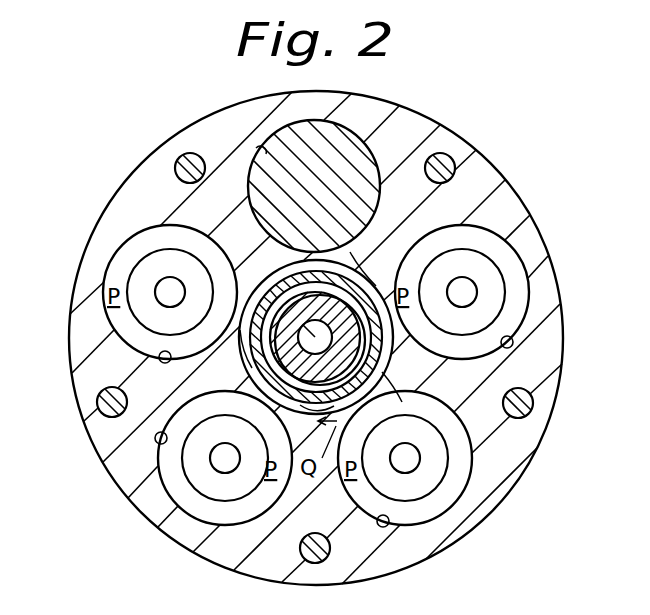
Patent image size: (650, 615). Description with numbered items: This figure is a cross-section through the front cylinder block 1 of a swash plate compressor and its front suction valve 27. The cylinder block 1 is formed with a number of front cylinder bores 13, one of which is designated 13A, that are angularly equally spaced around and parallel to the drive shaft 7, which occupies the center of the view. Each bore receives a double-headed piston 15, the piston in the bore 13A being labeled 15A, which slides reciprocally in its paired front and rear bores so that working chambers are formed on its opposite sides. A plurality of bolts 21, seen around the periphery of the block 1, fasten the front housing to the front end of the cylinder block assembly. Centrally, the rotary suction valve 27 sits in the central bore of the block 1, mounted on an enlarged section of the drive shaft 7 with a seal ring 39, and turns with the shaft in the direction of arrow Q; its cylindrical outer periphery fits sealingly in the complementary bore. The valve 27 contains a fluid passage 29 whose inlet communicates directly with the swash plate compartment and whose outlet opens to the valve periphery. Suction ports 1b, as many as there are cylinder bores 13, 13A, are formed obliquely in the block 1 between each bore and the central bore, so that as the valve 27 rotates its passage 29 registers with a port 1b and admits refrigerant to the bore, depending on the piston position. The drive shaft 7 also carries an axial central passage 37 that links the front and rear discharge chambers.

The front cylinder block 1 is at (515, 212).
The suction port 1b is at (355, 262).
The drive shaft 7 is at (394, 366).
The front cylinder bore 13 is at (165, 362).
The front cylinder bore 13A is at (262, 150).
The double-headed piston 15 is at (176, 258).
The double-headed piston 15A is at (363, 142).
The bolt 21 is at (180, 158).
The front rotary suction valve 27 is at (305, 258).
The fluid passage 29 is at (250, 370).
The axial central passage 37 is at (270, 292).
The seal ring 39 is at (268, 262).